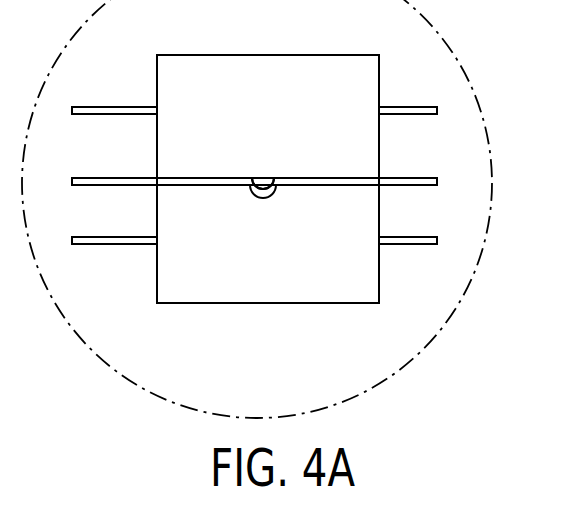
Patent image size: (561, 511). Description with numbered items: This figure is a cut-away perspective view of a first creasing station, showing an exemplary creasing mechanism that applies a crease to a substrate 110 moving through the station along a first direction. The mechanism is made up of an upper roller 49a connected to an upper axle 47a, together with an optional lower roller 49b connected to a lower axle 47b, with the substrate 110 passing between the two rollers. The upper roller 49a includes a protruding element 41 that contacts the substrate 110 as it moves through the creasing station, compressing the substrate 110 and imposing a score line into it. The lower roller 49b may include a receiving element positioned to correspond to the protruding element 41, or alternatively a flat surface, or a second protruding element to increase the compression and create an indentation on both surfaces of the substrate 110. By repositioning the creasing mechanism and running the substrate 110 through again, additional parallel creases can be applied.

The protruding element 41 is at (263, 170).
The upper axle 47a is at (427, 106).
The lower axle 47b is at (417, 233).
The upper roller 49a is at (232, 80).
The lower roller 49b is at (260, 263).
The substrate 110 is at (408, 186).